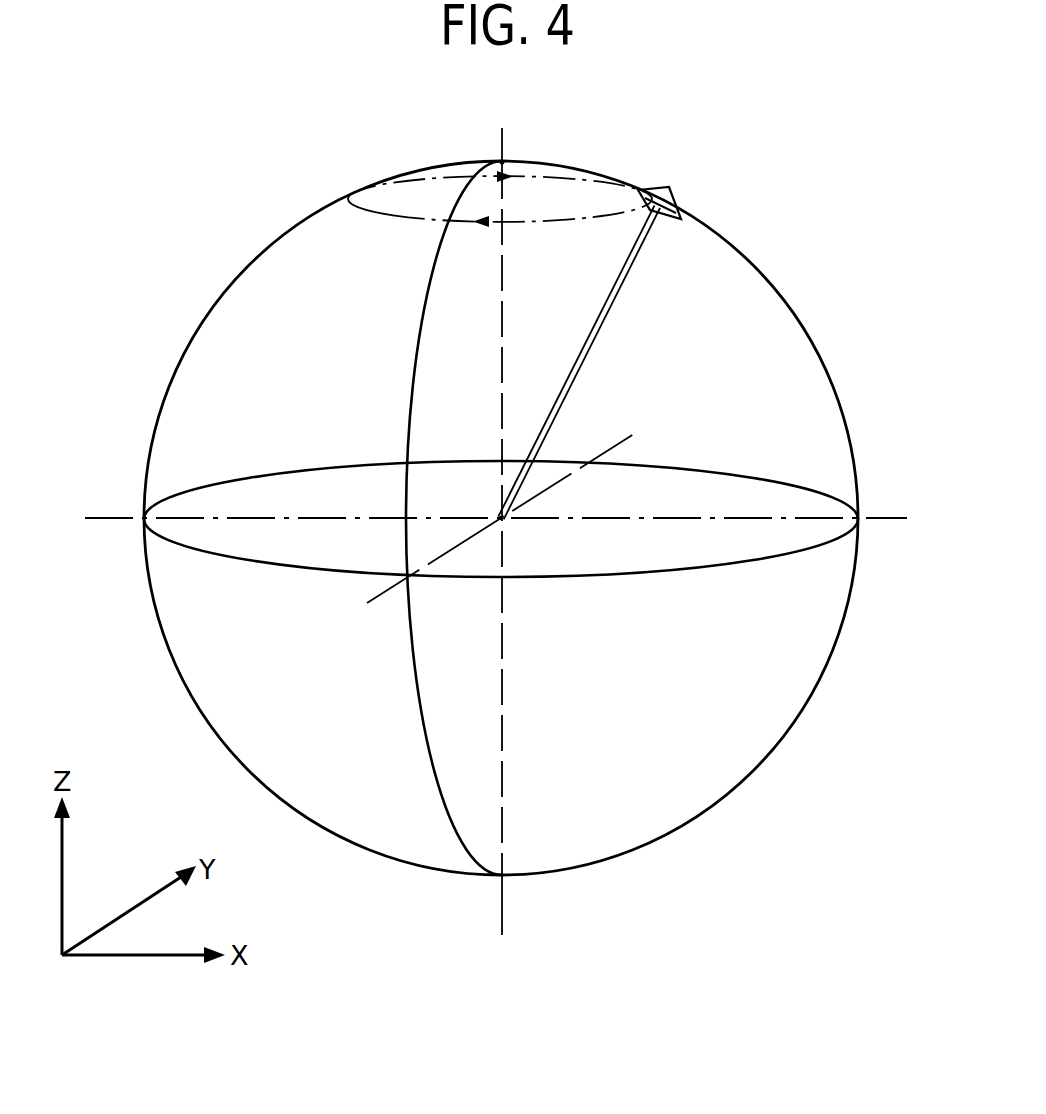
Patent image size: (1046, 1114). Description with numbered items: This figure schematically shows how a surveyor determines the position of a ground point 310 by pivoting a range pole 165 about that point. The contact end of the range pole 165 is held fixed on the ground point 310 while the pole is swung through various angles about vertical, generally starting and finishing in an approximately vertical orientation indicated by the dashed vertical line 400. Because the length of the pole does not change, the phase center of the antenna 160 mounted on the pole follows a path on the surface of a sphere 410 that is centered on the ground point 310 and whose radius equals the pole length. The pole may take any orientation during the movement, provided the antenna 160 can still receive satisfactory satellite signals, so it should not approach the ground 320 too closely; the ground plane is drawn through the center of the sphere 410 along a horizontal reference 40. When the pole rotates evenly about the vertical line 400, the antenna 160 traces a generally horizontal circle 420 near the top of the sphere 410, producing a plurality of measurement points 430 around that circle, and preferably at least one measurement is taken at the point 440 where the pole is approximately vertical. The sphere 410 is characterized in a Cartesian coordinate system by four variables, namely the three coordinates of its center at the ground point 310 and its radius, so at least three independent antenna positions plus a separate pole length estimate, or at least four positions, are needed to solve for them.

The horizontal reference axis 40 is at (893, 515).
The antenna 160 is at (664, 186).
The range pole 165 is at (607, 318).
The ground point 310 is at (513, 530).
The ground 320 is at (380, 559).
The vertical line 400 is at (497, 131).
The sphere 410 is at (800, 318).
The horizontal circle 420 is at (353, 204).
The measurement points 430 is at (395, 234).
The measurement point 440 is at (509, 153).